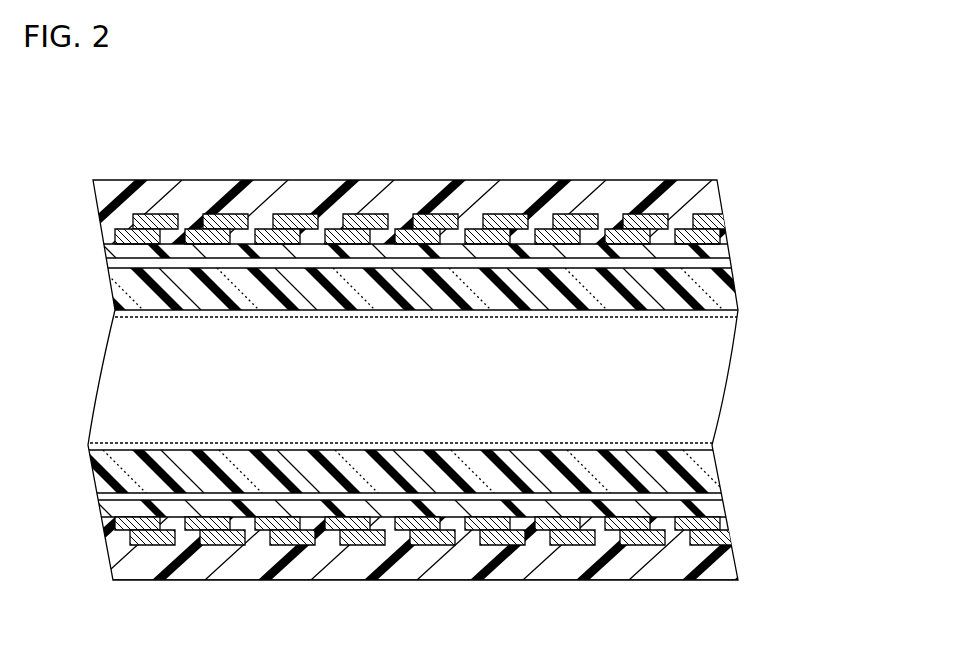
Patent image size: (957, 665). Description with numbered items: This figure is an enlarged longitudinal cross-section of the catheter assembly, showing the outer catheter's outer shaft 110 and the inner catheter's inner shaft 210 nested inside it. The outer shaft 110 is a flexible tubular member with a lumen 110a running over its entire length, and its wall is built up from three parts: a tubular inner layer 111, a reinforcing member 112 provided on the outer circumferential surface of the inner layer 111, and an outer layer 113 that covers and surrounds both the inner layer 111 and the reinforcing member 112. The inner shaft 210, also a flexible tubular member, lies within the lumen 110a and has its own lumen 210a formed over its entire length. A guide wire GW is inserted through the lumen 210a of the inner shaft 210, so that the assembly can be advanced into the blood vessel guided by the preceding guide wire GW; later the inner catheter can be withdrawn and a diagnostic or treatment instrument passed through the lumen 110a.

The outer shaft 110 is at (449, 213).
The inner layer 111 is at (737, 249).
The reinforcing member 112 is at (733, 217).
The outer layer 113 is at (720, 193).
The lumen 110a is at (597, 262).
The guide wire GW is at (447, 317).
The inner shaft 210 is at (678, 473).
The lumen 210a is at (632, 447).